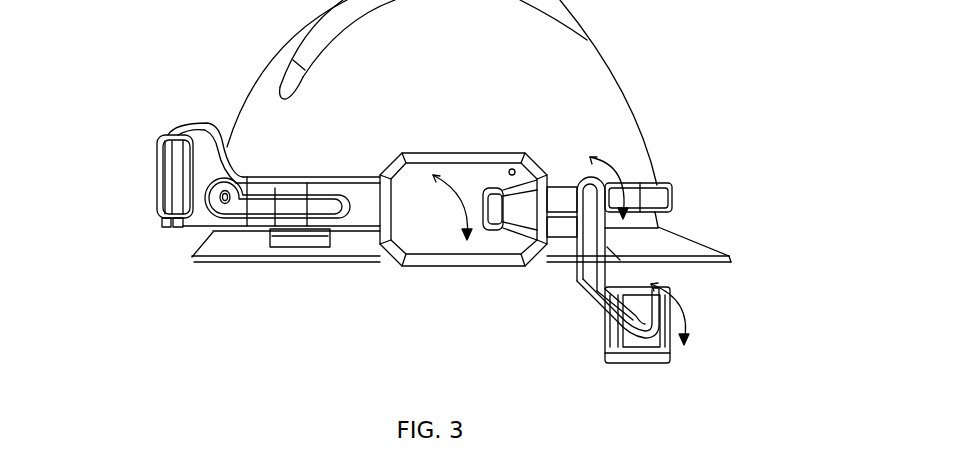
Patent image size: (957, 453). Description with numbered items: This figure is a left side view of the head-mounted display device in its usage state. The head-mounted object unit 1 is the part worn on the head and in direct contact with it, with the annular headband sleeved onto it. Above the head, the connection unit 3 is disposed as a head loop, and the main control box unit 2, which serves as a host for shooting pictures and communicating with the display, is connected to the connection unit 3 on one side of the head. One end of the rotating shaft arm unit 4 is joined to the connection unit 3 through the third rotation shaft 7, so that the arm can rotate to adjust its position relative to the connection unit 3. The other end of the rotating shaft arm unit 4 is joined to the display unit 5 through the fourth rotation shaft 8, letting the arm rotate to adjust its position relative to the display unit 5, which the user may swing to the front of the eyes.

The head-mounted object unit 1 is at (512, 53).
The main control box unit 2 is at (413, 237).
The connection unit 3 is at (213, 170).
The rotating shaft arm unit 4 is at (590, 276).
The display unit 5 is at (658, 350).
The third rotation shaft 7 is at (603, 203).
The fourth rotation shaft 8 is at (642, 325).